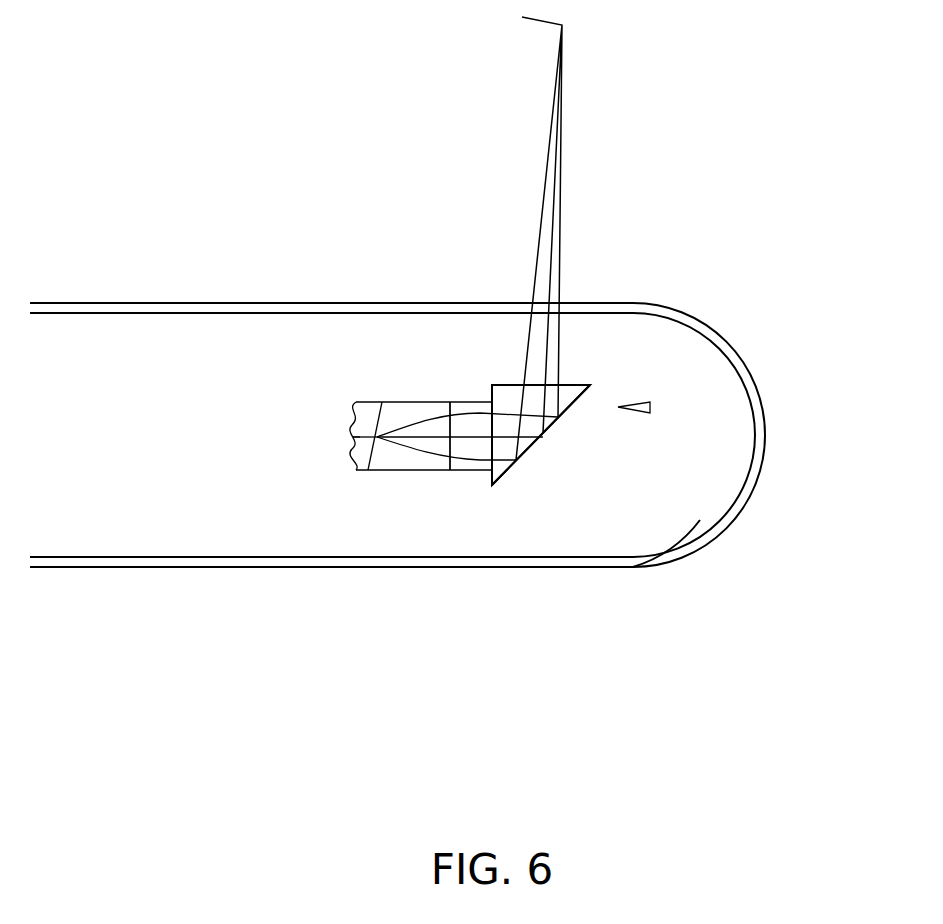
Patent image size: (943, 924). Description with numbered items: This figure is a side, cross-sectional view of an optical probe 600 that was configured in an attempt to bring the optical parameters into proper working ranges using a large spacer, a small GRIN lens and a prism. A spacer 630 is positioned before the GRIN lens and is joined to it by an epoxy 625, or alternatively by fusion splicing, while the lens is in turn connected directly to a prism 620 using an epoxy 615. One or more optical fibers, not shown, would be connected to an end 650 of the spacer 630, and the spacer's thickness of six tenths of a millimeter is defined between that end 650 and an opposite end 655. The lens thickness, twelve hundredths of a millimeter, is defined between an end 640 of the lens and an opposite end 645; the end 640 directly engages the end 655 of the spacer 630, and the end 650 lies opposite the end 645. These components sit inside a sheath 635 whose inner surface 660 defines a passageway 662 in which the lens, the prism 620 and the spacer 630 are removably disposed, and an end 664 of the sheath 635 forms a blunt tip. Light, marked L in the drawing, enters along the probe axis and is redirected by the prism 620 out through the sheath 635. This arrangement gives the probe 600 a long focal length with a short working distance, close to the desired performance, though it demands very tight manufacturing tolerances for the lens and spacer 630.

The optical probe 600 is at (355, 520).
The epoxy 615 is at (490, 474).
The prism 620 is at (560, 420).
The epoxy 625 is at (448, 402).
The spacer 630 is at (356, 402).
The sheath 635 is at (700, 322).
The end of lens 640 is at (443, 470).
The opposite end of lens 645 is at (498, 470).
The end of spacer 650 is at (353, 452).
The opposite end of spacer 655 is at (453, 402).
The inner surface 660 is at (197, 314).
The passageway 662 is at (650, 408).
The end of sheath 664 is at (745, 507).
The light beam L is at (562, 58).